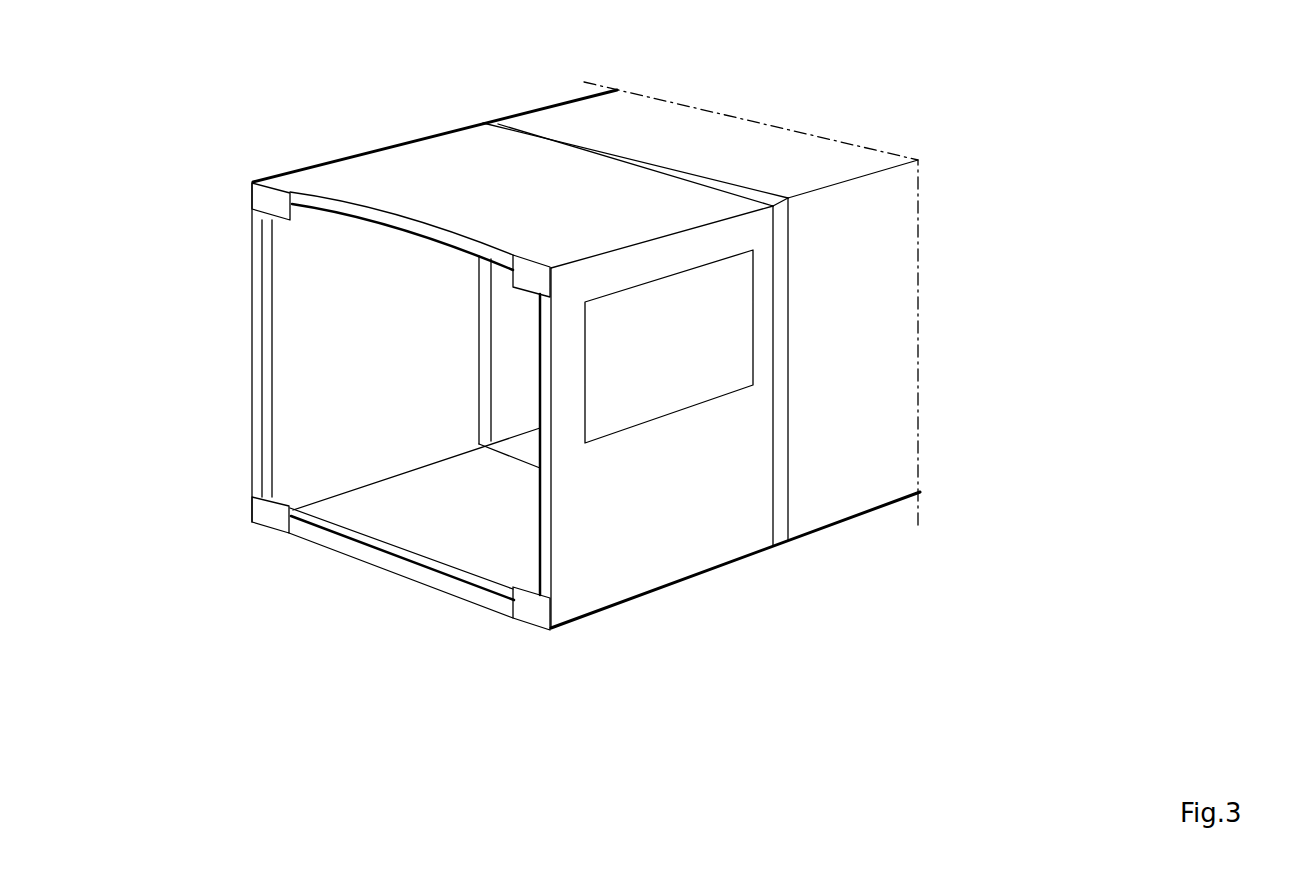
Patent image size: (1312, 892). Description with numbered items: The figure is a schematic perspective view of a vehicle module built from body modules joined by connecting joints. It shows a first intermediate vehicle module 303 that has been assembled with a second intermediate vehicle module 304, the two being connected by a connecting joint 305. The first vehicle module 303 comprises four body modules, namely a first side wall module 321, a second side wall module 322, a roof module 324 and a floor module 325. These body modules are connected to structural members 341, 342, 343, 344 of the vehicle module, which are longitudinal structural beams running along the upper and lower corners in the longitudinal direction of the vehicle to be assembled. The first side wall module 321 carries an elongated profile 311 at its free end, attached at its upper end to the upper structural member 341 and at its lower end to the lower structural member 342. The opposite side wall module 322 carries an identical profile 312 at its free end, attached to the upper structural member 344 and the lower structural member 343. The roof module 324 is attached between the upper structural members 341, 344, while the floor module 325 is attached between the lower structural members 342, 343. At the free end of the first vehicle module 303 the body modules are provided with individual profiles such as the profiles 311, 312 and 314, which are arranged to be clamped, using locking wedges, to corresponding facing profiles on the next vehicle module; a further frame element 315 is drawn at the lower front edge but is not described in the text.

The first intermediate vehicle module 303 is at (380, 126).
The second intermediate vehicle module 304 is at (543, 91).
The connecting joint 305 is at (793, 483).
The elongated profile 311 is at (250, 372).
The elongated profile 312 is at (533, 403).
The profile 314 is at (370, 229).
The lower frame member 315 is at (357, 563).
The first side wall module 321 is at (416, 344).
The second side wall module 322 is at (687, 514).
The roof module 324 is at (539, 207).
The floor module 325 is at (496, 527).
The upper structural member 341 is at (268, 196).
The lower structural member 342 is at (268, 517).
The lower structural member 343 is at (533, 615).
The upper structural member 344 is at (537, 278).